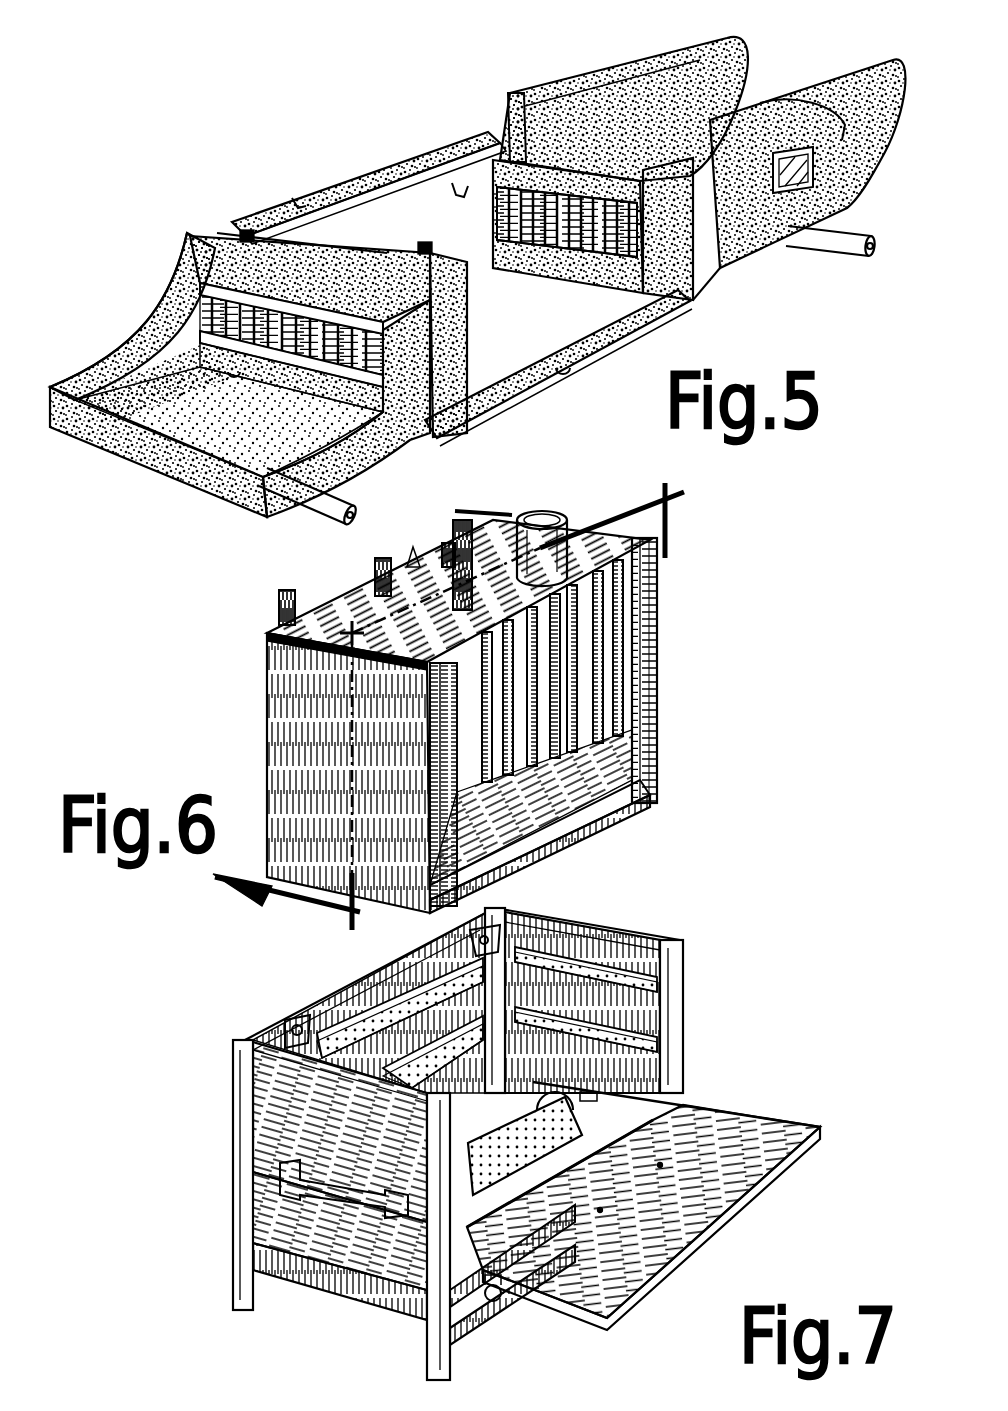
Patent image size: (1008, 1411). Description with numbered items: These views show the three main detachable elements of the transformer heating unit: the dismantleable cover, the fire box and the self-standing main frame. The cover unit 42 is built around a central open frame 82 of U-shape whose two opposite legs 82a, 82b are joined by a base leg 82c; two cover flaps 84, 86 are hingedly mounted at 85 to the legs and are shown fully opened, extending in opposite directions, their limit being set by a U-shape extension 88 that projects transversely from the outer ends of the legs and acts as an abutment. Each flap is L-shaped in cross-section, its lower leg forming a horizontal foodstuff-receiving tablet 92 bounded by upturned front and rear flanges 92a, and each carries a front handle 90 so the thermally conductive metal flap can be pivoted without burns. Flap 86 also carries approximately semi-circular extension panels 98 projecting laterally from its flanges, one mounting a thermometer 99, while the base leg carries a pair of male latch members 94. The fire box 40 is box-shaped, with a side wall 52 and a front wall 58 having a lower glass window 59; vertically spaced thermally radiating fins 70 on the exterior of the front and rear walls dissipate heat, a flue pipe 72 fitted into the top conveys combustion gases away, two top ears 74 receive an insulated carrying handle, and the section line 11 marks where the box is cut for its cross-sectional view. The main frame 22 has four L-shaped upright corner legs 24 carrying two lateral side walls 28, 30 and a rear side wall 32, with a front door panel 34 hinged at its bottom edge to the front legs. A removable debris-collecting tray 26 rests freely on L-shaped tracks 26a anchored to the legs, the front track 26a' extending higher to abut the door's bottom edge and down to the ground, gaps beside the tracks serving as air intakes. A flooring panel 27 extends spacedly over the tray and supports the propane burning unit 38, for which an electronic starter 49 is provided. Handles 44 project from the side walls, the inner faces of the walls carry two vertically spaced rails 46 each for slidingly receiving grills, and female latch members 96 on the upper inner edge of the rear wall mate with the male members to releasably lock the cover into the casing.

In FIG. 6, the section line 11- 11 is at (468, 716).
In FIG. 7, the main self-standing box-like frame 22 is at (461, 1142).
In FIG. 7, the upright corner legs 24 is at (683, 970).
In FIG. 7, the removable tray 26 is at (300, 1287).
In FIG. 7, the tracks 26a is at (340, 1320).
In FIG. 7, the front track 26a' is at (512, 1301).
In FIG. 7, the flooring panel 27 is at (707, 1113).
In FIG. 7, the lateral fixed side wall 28 is at (267, 1150).
In FIG. 7, the lateral fixed side wall 30 is at (623, 947).
In FIG. 7, the rear side wall 32 is at (347, 1000).
In FIG. 7, the front door panel 34 is at (780, 1120).
In FIG. 7, the propane burning unit 38 is at (600, 1093).
In FIG. 6, the fire box 40 is at (486, 696).
In FIG. 5, the cover unit 42 is at (422, 254).
In FIG. 7, the handles 44 is at (287, 1187).
In FIG. 7, the rails 46 is at (567, 953).
In FIG. 7, the electronic starter 49 is at (507, 1300).
In FIG. 6, the side wall of fire box 52 is at (300, 697).
In FIG. 6, the front wall of fire box 58 is at (655, 784).
In FIG. 6, the lower window 59 is at (655, 735).
In FIG. 6, the thermally radiating fins 70 is at (365, 587).
In FIG. 6, the flue pipe 72 is at (548, 516).
In FIG. 6, the top ears 74 is at (415, 548).
In FIG. 5, the central open frame 82 is at (350, 173).
In FIG. 5, the leg of frame 82a is at (496, 133).
In FIG. 5, the leg of frame 82b is at (333, 240).
In FIG. 5, the base leg of frame 82c is at (400, 173).
In FIG. 5, the cover flap 84 is at (160, 293).
In FIG. 5, the hinge 85 is at (250, 208).
In FIG. 5, the cover flap 86 is at (676, 85).
In FIG. 5, the U-shape extension 88 is at (614, 364).
In FIG. 5, the front handle 90 is at (300, 510).
In FIG. 5, the foodstuff-receiving tablet 92 is at (230, 473).
In FIG. 5, the upturned flanges 92a is at (83, 373).
In FIG. 5, the male latch members 94 is at (300, 197).
In FIG. 7, the female latch members 96 is at (292, 1023).
In FIG. 5, the extension panels 98 is at (740, 77).
In FIG. 5, the thermometer 99 is at (772, 104).